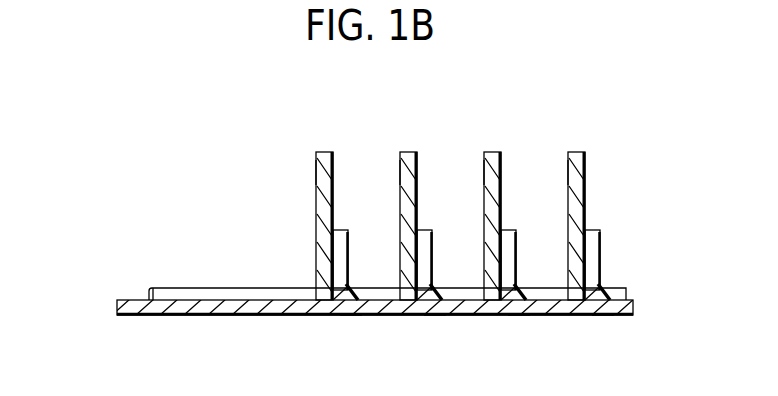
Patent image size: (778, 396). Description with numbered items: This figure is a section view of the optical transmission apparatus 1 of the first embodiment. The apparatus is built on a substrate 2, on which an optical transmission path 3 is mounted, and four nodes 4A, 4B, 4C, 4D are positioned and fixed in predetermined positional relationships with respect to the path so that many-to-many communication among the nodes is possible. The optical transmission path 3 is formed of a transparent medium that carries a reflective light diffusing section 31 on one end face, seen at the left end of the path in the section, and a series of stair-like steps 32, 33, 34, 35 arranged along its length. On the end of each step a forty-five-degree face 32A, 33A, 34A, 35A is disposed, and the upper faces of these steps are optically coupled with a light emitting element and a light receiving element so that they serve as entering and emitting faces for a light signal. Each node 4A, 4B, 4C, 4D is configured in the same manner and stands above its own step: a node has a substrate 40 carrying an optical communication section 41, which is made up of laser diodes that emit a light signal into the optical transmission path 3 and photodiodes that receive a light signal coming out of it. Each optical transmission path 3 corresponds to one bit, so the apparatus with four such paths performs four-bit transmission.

The optical transmission apparatus 1 is at (630, 133).
The substrate 2 is at (117, 309).
The optical transmission path 3 is at (198, 280).
The reflective light diffusing section 31 is at (150, 292).
The node 4A is at (306, 170).
The node 4B is at (390, 170).
The node 4C is at (474, 170).
The node 4D is at (558, 170).
The substrate 40 is at (324, 151).
The optical communication section 41 is at (345, 230).
The step 32 is at (349, 284).
The step 33 is at (433, 284).
The step 34 is at (517, 284).
The step 35 is at (601, 284).
The 45-degree face 32A is at (356, 317).
The 45-degree face 33A is at (440, 317).
The 45-degree face 34A is at (524, 317).
The 45-degree face 35A is at (608, 317).